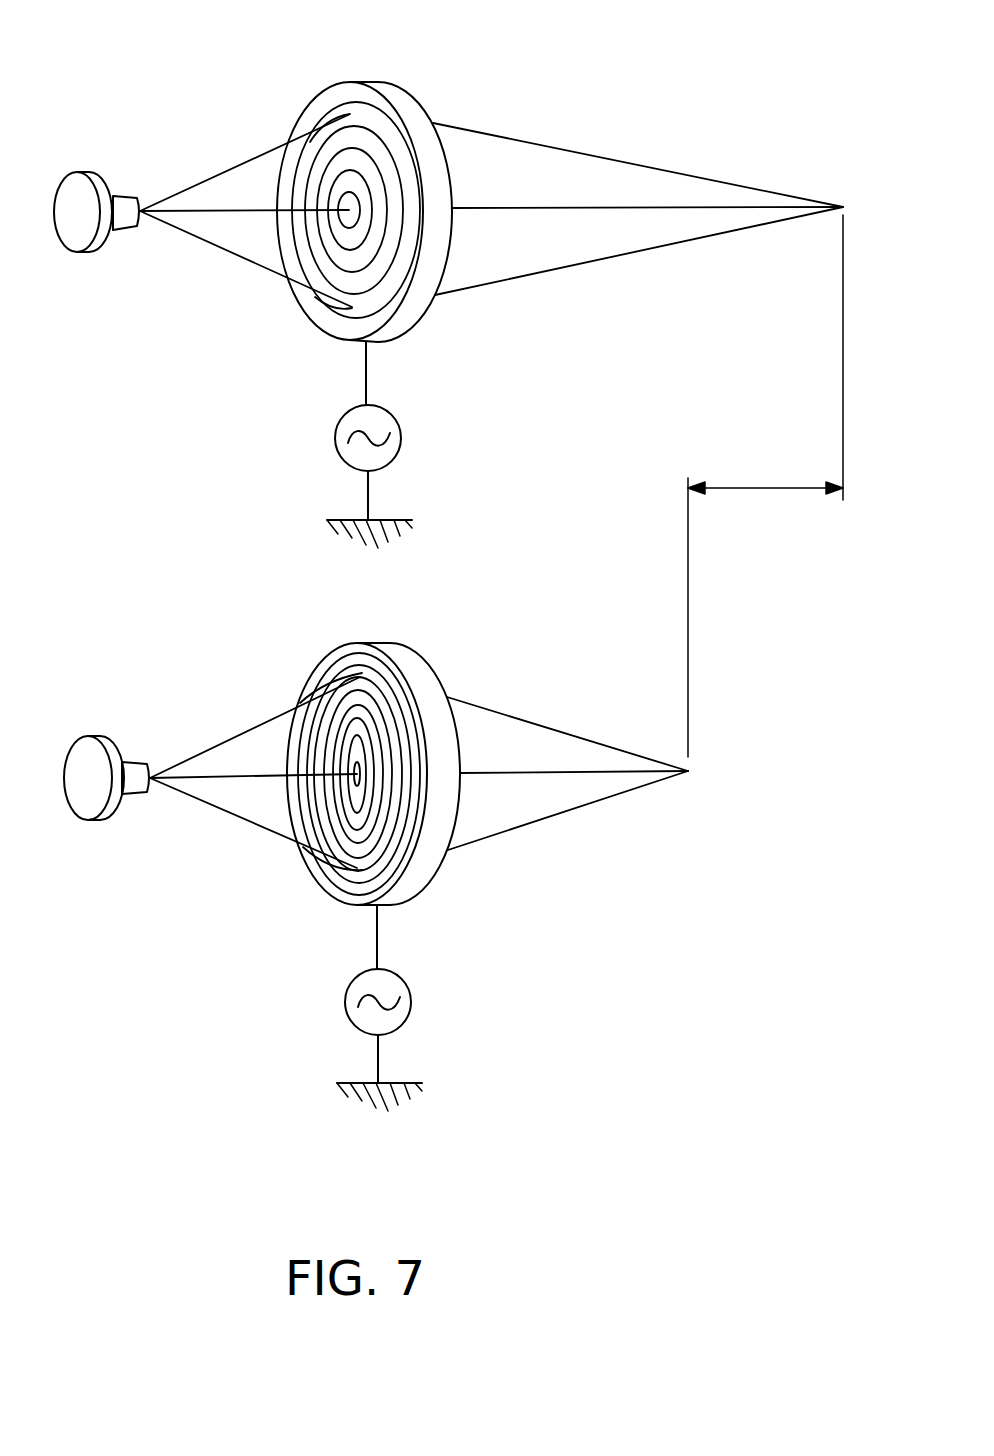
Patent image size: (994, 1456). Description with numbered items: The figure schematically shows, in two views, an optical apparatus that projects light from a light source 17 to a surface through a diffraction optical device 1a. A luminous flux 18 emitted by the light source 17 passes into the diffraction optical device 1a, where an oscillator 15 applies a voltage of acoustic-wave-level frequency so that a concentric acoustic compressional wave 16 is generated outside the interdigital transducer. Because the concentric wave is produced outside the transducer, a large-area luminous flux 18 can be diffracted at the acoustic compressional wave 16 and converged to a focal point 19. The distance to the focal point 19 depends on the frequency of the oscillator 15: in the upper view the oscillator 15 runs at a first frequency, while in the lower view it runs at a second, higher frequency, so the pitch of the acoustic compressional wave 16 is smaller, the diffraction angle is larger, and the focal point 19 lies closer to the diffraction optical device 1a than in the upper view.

The diffraction optical device 1a is at (323, 66).
The oscillator 15 is at (338, 420).
The acoustic compressional wave 16 is at (380, 136).
The light source 17 is at (123, 190).
The luminous flux 18 is at (232, 168).
The focal point 19 is at (843, 195).